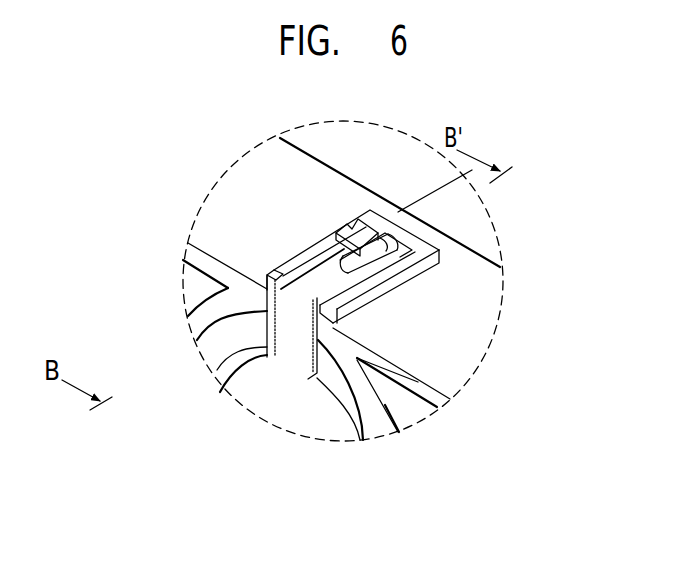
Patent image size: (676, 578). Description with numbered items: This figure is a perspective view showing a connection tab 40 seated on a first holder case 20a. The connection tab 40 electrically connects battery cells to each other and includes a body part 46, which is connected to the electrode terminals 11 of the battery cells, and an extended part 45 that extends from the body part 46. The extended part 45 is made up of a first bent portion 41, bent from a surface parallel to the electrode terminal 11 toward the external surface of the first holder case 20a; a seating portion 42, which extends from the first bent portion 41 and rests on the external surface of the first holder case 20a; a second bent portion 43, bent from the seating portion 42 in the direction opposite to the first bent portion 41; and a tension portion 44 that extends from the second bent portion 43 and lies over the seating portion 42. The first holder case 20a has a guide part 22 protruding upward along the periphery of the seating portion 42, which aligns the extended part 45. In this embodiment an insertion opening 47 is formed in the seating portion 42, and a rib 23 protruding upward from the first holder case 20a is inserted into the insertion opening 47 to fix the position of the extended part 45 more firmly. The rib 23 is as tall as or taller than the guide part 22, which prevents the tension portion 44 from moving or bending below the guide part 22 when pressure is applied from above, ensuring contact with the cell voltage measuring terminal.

The electrode terminal 11 is at (365, 413).
The first holder case 20a is at (455, 358).
The guide part 22 is at (432, 260).
The rib 23 is at (400, 273).
The connection tab 40 is at (147, 346).
The first bent portion 41 is at (267, 272).
The seating portion 42 is at (318, 283).
The second bent portion 43 is at (391, 242).
The tension portion 44 is at (346, 252).
The extended part 45 is at (256, 327).
The body part 46 is at (234, 383).
The insertion opening 47 is at (330, 242).